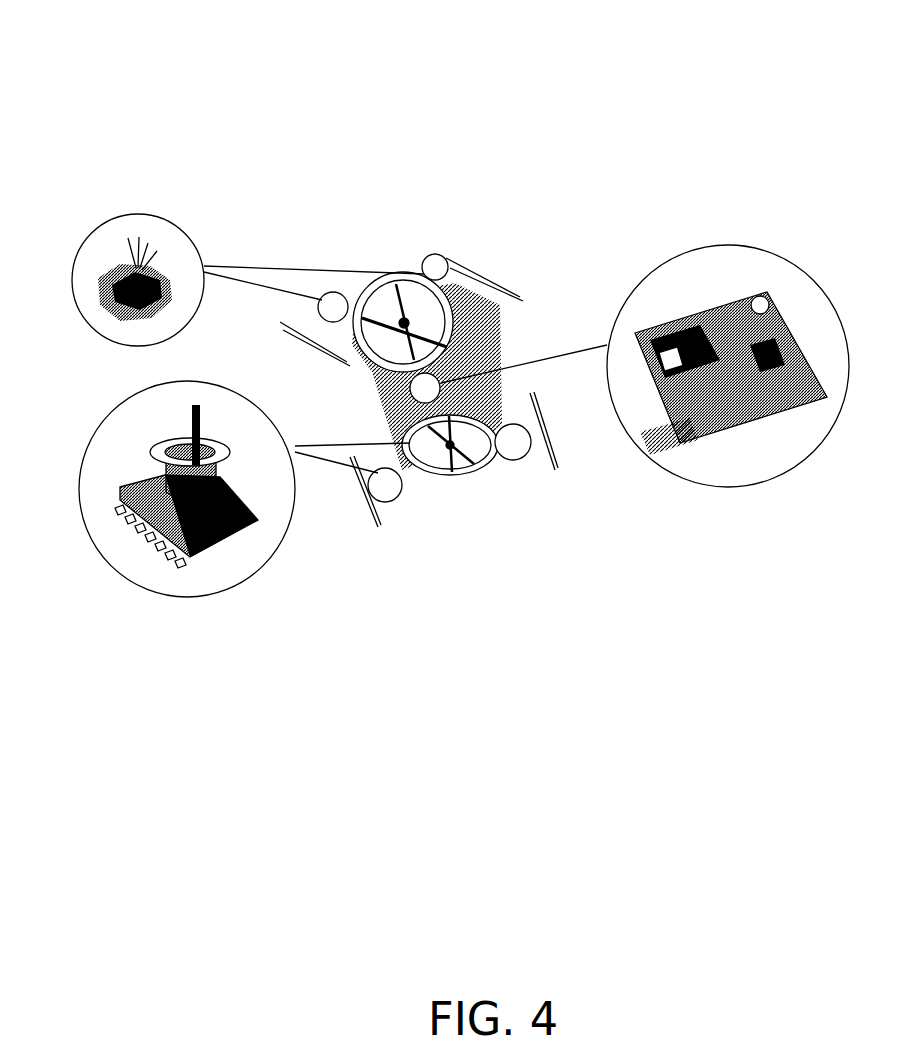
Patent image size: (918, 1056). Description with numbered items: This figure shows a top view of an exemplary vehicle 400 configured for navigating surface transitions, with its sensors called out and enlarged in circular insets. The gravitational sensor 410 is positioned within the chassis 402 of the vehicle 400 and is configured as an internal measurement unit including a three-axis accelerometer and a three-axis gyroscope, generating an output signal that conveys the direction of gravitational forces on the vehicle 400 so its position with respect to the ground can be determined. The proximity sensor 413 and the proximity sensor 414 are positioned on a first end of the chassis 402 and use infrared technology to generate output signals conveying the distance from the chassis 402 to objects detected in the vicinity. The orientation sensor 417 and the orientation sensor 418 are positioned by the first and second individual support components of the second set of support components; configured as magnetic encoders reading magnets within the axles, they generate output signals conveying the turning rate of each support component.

The vehicle 400 is at (780, 86).
The chassis 402 is at (455, 485).
The gravitational sensor 410 is at (440, 387).
The proximity sensor 413 is at (332, 293).
The proximity sensor 414 is at (445, 255).
The orientation sensor 417 is at (387, 500).
The orientation sensor 418 is at (510, 460).